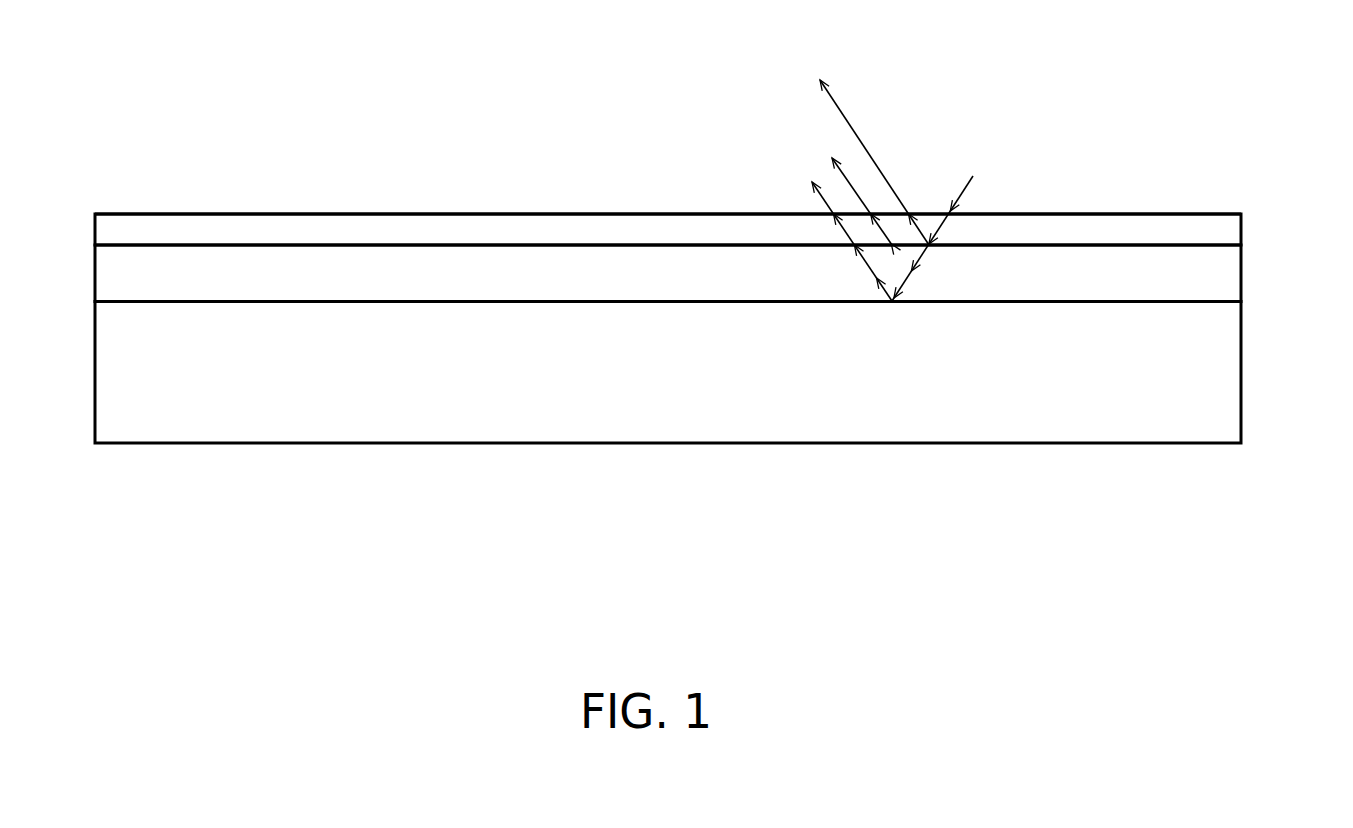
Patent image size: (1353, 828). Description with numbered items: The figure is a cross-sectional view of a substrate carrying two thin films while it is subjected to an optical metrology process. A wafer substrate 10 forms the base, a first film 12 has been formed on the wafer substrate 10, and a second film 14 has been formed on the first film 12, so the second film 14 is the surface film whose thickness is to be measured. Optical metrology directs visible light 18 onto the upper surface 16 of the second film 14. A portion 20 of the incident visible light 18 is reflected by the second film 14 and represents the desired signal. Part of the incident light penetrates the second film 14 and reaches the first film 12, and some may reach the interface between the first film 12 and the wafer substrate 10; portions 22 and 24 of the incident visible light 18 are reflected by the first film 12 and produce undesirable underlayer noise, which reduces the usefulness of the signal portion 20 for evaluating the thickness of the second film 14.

The wafer substrate 10 is at (1242, 372).
The first film 12 is at (1242, 272).
The second film 14 is at (1242, 227).
The upper surface 16 is at (1173, 211).
The visible light 18 is at (960, 193).
The portion of incident visible light 20 is at (877, 165).
The portion of incident visible light 22 is at (848, 167).
The portion of incident visible light 24 is at (813, 192).